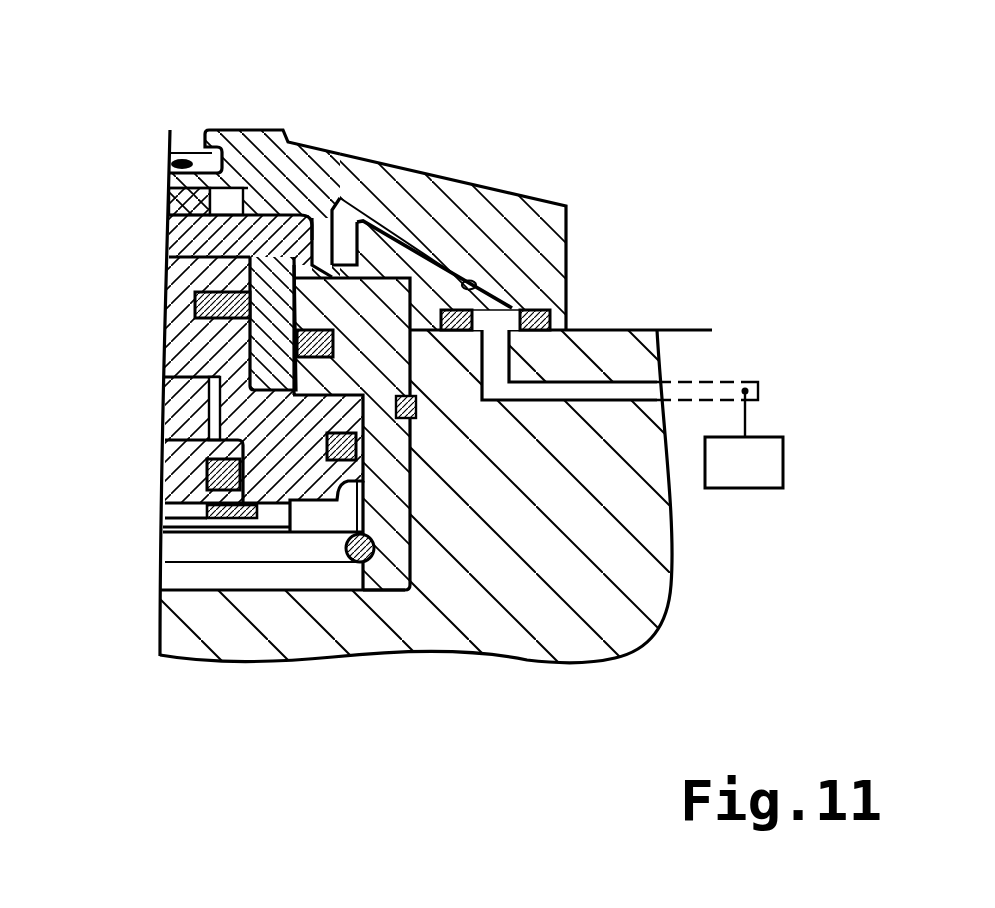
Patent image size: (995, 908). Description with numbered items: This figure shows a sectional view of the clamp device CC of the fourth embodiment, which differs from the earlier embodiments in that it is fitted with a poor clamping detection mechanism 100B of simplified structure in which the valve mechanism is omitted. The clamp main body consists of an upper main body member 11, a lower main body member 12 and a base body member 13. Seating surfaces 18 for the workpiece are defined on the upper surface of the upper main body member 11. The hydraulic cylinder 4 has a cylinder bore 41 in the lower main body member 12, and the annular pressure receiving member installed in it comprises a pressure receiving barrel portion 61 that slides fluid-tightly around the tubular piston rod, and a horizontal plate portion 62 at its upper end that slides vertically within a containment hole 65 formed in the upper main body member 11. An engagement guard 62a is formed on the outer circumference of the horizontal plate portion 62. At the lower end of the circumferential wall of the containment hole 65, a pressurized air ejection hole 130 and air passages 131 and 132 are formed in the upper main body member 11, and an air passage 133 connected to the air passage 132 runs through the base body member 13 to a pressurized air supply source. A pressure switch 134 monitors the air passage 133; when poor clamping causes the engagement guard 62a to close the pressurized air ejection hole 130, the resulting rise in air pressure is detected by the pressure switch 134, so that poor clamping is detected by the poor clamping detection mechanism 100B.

The hydraulic cylinder 4 is at (235, 568).
The upper main body member 11 is at (522, 192).
The lower main body member 12 is at (412, 525).
The base body member 13 is at (608, 568).
The seating surfaces 18 is at (286, 129).
The cylinder bore 41 is at (355, 510).
The pressure receiving barrel portion 61 is at (270, 348).
The horizontal plate portion 62 is at (168, 233).
The engagement guard 62a is at (300, 247).
The containment hole 65 is at (322, 250).
The poor clamping detection mechanism 100B is at (418, 187).
The pressurized air ejection hole 130 is at (326, 258).
The air passage 131 is at (345, 240).
The air passage 132 is at (478, 286).
The air passage 133 is at (597, 378).
The pressure switch 134 is at (748, 489).
The clamp device CC is at (458, 171).